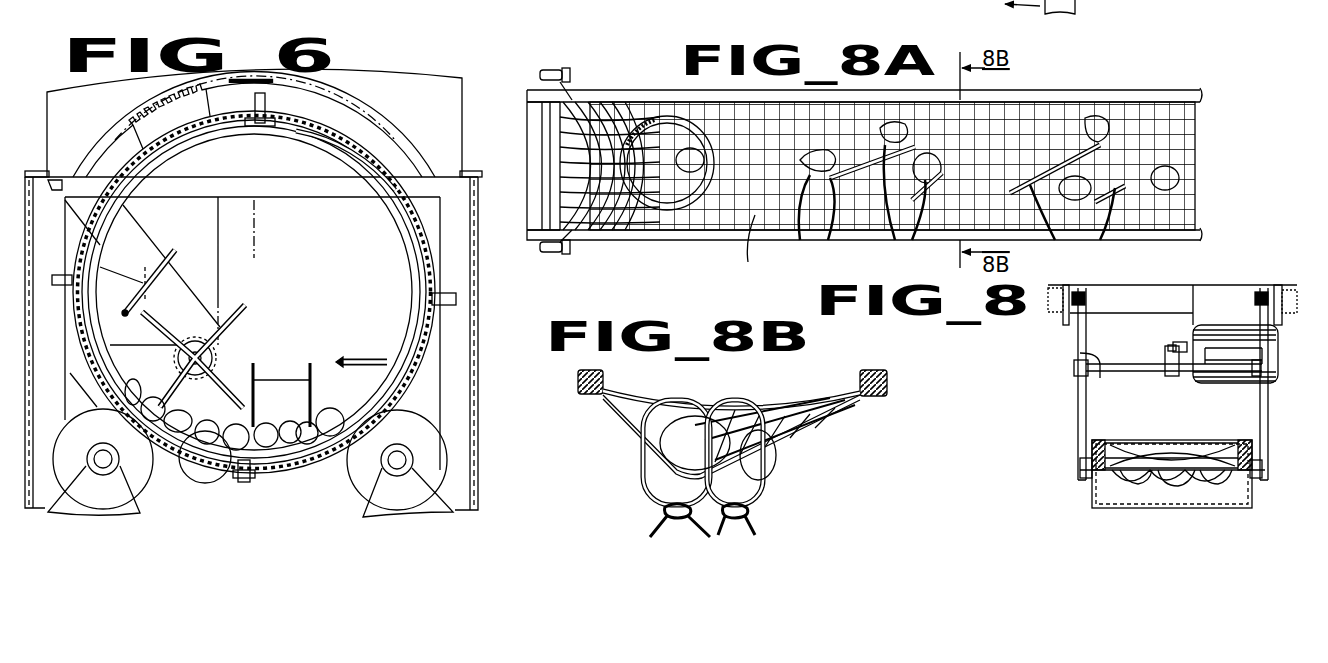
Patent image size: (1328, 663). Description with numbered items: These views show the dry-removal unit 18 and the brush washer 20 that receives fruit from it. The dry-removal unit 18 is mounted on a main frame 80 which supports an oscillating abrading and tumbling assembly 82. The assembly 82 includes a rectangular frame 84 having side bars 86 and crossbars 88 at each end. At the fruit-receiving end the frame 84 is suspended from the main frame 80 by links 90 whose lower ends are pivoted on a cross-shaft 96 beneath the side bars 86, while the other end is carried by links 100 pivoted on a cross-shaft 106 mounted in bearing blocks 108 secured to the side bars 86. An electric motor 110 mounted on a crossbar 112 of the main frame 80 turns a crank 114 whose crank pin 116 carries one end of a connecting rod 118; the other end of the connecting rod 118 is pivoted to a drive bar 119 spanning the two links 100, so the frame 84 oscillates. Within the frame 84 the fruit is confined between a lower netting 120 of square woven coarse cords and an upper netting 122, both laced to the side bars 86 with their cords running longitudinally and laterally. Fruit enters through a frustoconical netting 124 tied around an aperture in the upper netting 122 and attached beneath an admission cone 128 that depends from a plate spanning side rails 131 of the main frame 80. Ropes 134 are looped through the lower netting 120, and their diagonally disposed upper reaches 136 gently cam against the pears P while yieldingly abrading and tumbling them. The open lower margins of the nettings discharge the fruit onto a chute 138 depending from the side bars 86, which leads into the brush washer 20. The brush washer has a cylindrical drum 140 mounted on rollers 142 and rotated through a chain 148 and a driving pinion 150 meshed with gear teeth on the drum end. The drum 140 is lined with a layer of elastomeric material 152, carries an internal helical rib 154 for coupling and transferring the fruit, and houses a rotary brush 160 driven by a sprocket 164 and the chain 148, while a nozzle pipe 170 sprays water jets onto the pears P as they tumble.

In FIG. 8, the dry-removal unit 18 is at (1157, 382).
In FIG. 6, the brush washer 20 is at (254, 260).
In FIG. 8, the main frame 80 is at (1188, 292).
In FIG. 8A, the oscillating abrading and tumbling assembly 82 is at (866, 161).
In FIG. 8, the oscillating abrading and tumbling assembly 82 is at (1158, 459).
In FIG. 8A, the rectangular frame 84 is at (545, 90).
In FIG. 8, the rectangular frame 84 is at (1090, 452).
In FIG. 8A, the side bars 86 is at (1183, 92).
In FIG. 8B, the side bars 86 is at (578, 382).
In FIG. 8, the side bars 86 is at (1110, 432).
In FIG. 8A, the crossbars 88 is at (540, 103).
In FIG. 8, the crossbars 88 is at (1188, 440).
In FIG. 8A, the links 90 is at (548, 72).
In FIG. 8A, the cross-shaft 96 is at (550, 140).
In FIG. 8, the links 100 is at (1080, 383).
In FIG. 8, the cross-shaft 106 is at (1235, 476).
In FIG. 8, the bearing blocks 108 is at (1090, 485).
In FIG. 8, the electric motor 110 is at (1208, 326).
In FIG. 8, the crossbar 112 is at (1134, 298).
In FIG. 8, the crank 114 is at (1180, 340).
In FIG. 8, the crank pin 116 is at (1165, 357).
In FIG. 8, the connecting rod 118 is at (1163, 363).
In FIG. 8, the drive bar 119 is at (1082, 352).
In FIG. 8A, the lower netting 120 is at (754, 251).
In FIG. 8B, the lower netting 120 is at (833, 435).
In FIG. 8, the lower netting 120 is at (1166, 480).
In FIG. 8A, the upper netting 122 is at (1045, 105).
In FIG. 8B, the upper netting 122 is at (797, 403).
In FIG. 8, the upper netting 122 is at (1148, 455).
In FIG. 8A, the frustoconical netting 124 is at (667, 154).
In FIG. 8A, the admission cone 128 is at (665, 210).
In FIG. 8, the side rails 131 is at (1068, 313).
In FIG. 8A, the ropes 134 is at (915, 205).
In FIG. 8B, the ropes 134 is at (650, 492).
In FIG. 8A, the upper reaches 136 is at (980, 206).
In FIG. 8B, the upper reaches 136 is at (737, 403).
In FIG. 6, the chute 138 is at (297, 380).
In FIG. 8, the chute 138 is at (1090, 512).
In FIG. 6, the cylindrical drum 140 is at (330, 130).
In FIG. 6, the rollers 142 is at (140, 495).
In FIG. 6, the chain 148 is at (232, 212).
In FIG. 6, the driving pinion 150 is at (175, 118).
In FIG. 6, the layer of elastomeric material 152 is at (285, 130).
In FIG. 6, the helical rib 154 is at (398, 246).
In FIG. 6, the rotary brush 160 is at (248, 303).
In FIG. 6, the sprocket 164 is at (215, 357).
In FIG. 6, the nozzle pipe 170 is at (150, 300).
In FIG. 6, the pears P is at (188, 466).
In FIG. 8A, the pears P is at (810, 178).
In FIG. 8B, the pears P is at (815, 480).
In FIG. 8, the pears P is at (1186, 488).